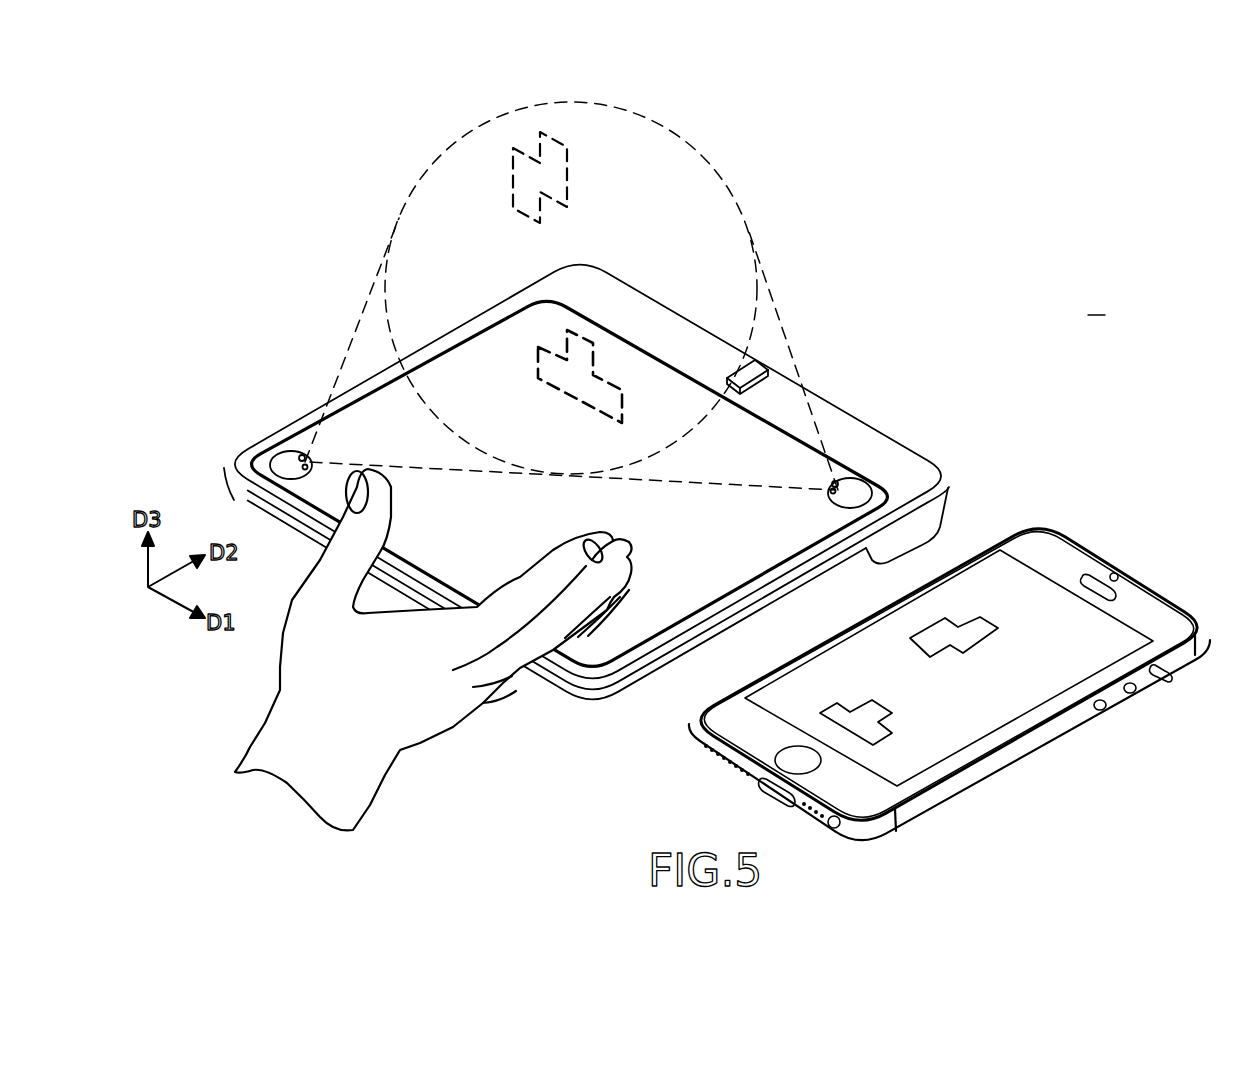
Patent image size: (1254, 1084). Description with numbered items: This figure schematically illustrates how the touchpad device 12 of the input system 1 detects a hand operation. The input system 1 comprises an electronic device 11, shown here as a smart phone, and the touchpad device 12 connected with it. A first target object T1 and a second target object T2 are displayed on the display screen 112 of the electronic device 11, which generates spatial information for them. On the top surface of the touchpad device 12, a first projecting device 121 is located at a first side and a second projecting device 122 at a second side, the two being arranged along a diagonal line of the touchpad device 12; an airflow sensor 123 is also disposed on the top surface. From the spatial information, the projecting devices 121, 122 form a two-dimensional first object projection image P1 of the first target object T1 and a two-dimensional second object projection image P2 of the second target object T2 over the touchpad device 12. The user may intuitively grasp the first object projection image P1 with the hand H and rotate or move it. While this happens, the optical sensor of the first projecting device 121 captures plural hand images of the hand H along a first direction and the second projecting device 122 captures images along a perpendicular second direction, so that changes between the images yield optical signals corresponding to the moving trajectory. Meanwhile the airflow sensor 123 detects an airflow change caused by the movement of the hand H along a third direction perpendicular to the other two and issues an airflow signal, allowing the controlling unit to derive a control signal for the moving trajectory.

The input system 1 is at (1096, 304).
The electronic device 11 is at (1146, 606).
The display screen 112 is at (997, 710).
The touchpad device 12 is at (823, 418).
The first projecting device 121 is at (860, 486).
The second projecting device 122 is at (288, 458).
The airflow sensor 123 is at (752, 368).
The first object projection image P1 is at (553, 187).
The second object projection image P2 is at (542, 362).
The first target object T1 is at (952, 627).
The second target object T2 is at (843, 713).
The hand H is at (427, 720).